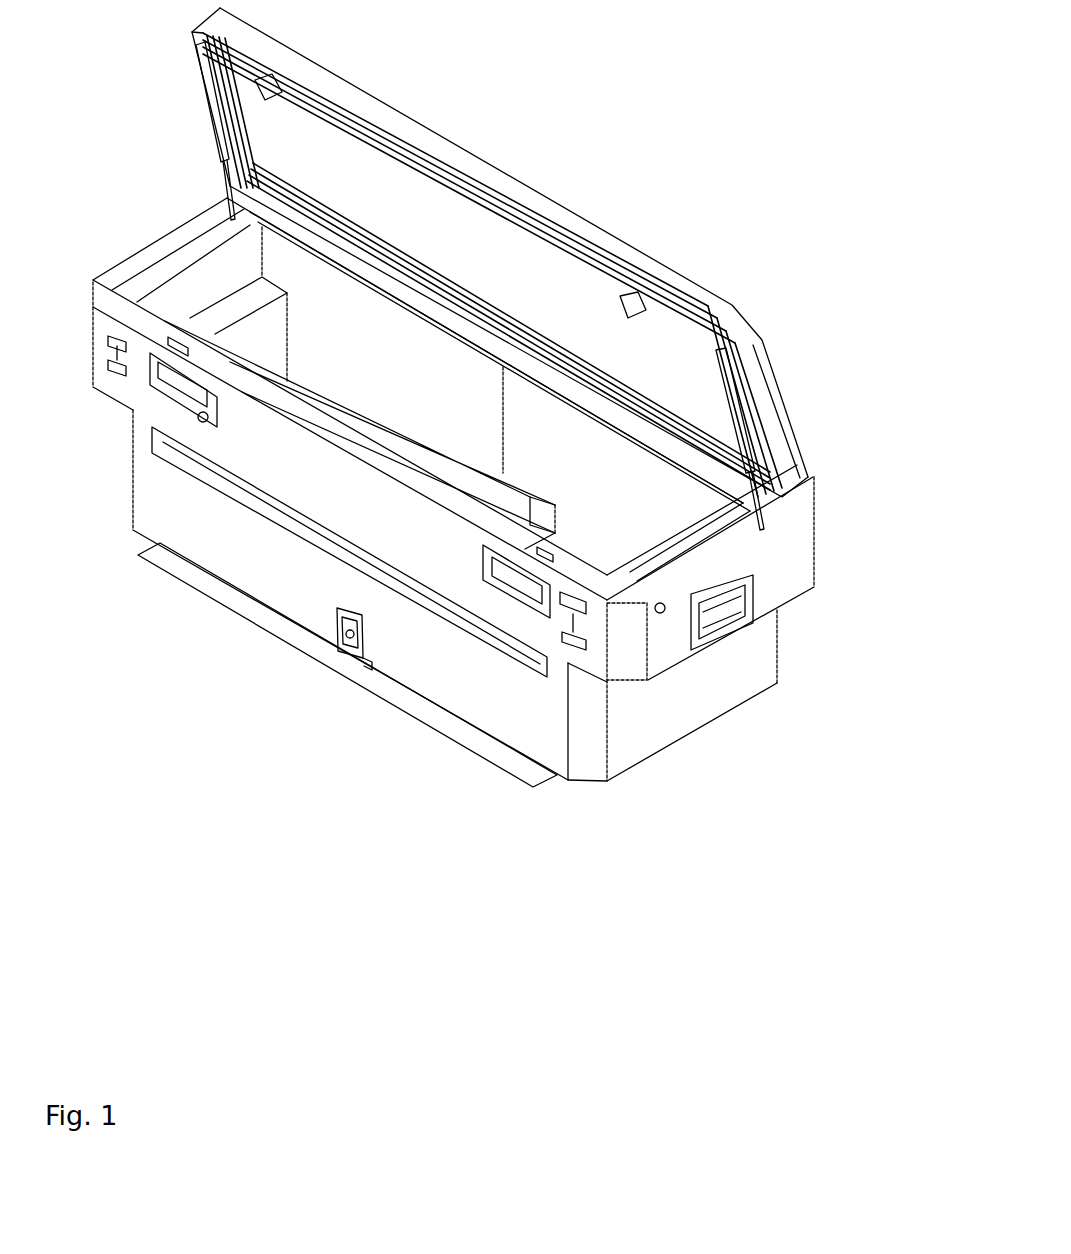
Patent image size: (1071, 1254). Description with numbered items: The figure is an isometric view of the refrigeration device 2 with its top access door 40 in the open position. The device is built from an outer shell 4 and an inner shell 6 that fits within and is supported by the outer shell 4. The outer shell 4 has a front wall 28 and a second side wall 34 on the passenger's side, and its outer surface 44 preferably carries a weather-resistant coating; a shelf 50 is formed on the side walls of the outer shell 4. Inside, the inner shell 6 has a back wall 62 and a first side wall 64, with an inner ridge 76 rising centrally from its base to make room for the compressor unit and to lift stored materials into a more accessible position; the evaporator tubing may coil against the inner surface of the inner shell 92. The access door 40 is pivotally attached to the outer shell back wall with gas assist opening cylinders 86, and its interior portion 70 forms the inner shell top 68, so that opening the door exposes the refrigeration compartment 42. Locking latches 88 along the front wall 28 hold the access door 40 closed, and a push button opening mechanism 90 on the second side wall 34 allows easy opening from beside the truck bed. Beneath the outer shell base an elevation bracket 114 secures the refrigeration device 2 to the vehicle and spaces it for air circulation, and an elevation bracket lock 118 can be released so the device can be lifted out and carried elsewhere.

The refrigeration device 2 is at (688, 47).
The outer shell 4 is at (417, 675).
The inner shell 6 is at (363, 373).
The front wall 28 is at (235, 563).
The second side wall 34 is at (718, 675).
The access door 40 is at (418, 110).
The refrigeration compartment 42 is at (582, 549).
The outer surface 44 is at (140, 512).
The shelf 50 is at (227, 317).
The back wall 62 is at (545, 475).
The first side wall 64 is at (242, 357).
The top 68 is at (458, 277).
The interior portion 70 is at (532, 305).
The inner ridge 76 is at (467, 471).
The gas assist opening cylinders 86 is at (207, 110).
The locking latches 88 is at (267, 92).
The push button opening mechanism 90 is at (661, 615).
The inner surface of the inner shell 92 is at (409, 415).
The elevation bracket 114 is at (467, 747).
The elevation bracket lock 118 is at (340, 643).